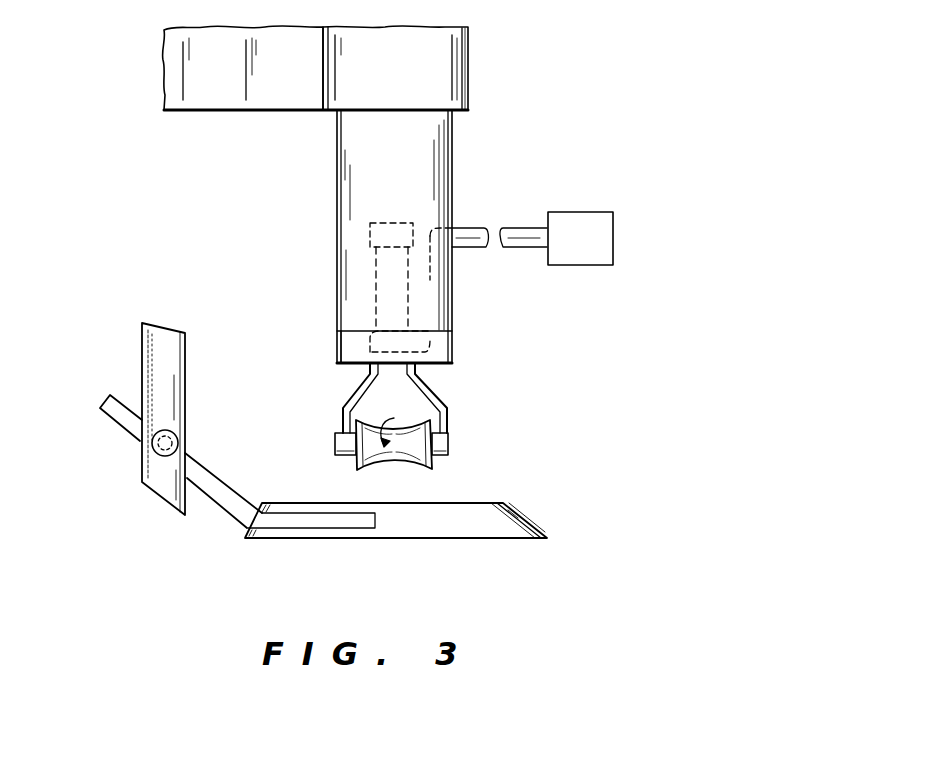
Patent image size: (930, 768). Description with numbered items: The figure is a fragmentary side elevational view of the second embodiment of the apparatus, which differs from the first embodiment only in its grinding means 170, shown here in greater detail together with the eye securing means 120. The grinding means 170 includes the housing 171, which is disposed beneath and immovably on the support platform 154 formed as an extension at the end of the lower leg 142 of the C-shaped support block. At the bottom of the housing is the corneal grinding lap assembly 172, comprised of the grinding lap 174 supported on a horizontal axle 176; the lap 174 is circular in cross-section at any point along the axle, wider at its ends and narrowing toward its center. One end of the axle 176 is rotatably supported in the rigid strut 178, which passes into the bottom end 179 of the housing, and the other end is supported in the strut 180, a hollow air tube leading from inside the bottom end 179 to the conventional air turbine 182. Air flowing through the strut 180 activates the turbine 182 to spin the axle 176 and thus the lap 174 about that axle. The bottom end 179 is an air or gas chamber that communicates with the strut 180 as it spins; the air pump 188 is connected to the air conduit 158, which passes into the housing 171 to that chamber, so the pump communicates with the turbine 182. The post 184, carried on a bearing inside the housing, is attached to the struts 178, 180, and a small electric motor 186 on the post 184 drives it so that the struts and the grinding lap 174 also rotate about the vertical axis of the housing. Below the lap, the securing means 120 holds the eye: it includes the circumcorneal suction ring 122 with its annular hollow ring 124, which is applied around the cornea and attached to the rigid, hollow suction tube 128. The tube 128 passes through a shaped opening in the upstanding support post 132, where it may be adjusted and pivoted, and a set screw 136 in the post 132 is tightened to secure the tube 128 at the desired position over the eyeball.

The securing means 120 is at (118, 428).
The circumcorneal suction ring 122 is at (547, 520).
The annular hollow ring 124 is at (483, 540).
The suction tube 128 is at (232, 516).
The support post 132 is at (140, 352).
The set screw 136 is at (152, 458).
The lower leg 142 is at (282, 111).
The support platform 154 is at (468, 68).
The air conduit 158 is at (518, 250).
The grinding means 170 is at (474, 139).
The housing 171 is at (452, 176).
The corneal grinding lap assembly 172 is at (468, 414).
The grinding lap 174 is at (398, 470).
The horizontal axle 176 is at (448, 447).
The rigid strut 178 is at (440, 388).
The bottom end of housing 179 is at (337, 349).
The strut 180 is at (360, 384).
The air turbine 182 is at (333, 445).
The post 184 is at (374, 276).
The electric motor 186 is at (418, 203).
The air pump 188 is at (586, 265).